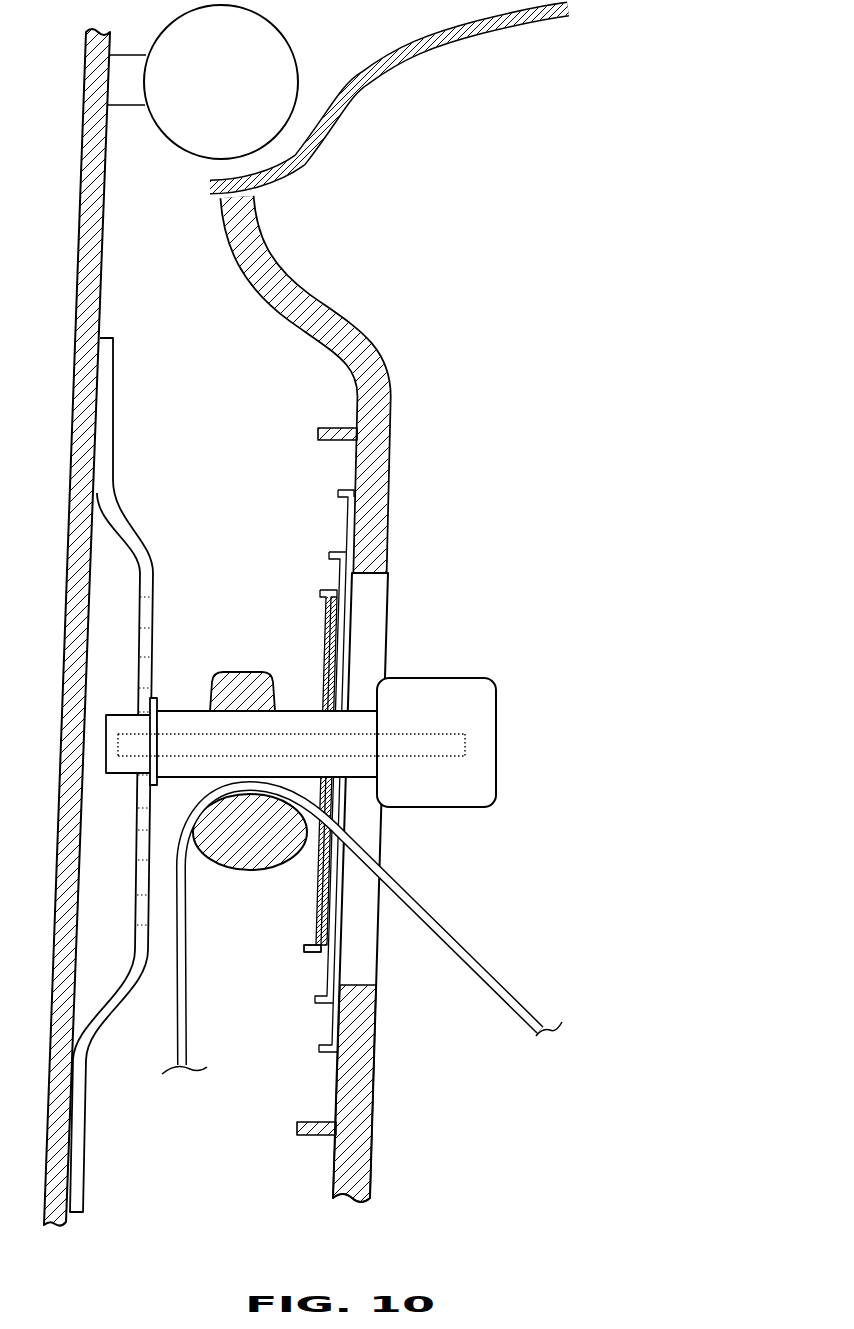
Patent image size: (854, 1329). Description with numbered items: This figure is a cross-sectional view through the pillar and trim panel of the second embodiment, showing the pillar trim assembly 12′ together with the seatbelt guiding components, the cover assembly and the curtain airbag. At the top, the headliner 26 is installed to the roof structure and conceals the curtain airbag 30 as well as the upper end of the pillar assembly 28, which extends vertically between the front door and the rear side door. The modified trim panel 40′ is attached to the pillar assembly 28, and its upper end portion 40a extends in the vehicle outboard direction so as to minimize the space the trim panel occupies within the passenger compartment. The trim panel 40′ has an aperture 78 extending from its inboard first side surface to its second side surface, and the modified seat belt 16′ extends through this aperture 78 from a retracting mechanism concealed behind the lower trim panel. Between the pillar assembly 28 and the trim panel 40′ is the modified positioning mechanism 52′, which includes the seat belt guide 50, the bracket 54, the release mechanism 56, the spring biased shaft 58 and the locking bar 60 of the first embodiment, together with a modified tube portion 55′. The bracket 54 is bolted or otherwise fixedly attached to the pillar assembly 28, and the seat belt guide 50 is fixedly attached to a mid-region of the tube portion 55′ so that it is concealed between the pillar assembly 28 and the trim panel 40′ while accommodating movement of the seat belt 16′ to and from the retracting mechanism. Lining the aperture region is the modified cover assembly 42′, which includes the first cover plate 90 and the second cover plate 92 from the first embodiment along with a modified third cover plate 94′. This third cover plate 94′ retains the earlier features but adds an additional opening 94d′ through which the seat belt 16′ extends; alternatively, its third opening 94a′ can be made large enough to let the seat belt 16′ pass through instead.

The pillar trim assembly 12′ is at (362, 326).
The seat belt 16′ is at (472, 962).
The headliner 26 is at (471, 30).
The pillar assembly 28 is at (88, 213).
The curtain airbag 30 is at (245, 32).
The upper end portion 40a is at (284, 266).
The trim panel 40′ is at (392, 378).
The cover assembly 42′ is at (315, 960).
The seat belt guide 50 is at (253, 672).
The positioning mechanism 52′ is at (174, 710).
The bracket 54 is at (108, 462).
The tube portion 55′ is at (183, 776).
The release mechanism 56 is at (487, 742).
The spring biased shaft 58 is at (312, 740).
The locking bar 60 is at (122, 727).
The aperture 78 is at (368, 593).
The first cover plate 90 is at (349, 610).
The second cover plate 92 is at (338, 648).
The third cover plate 94′ is at (337, 918).
The third opening 94a′ is at (330, 780).
The additional opening 94d′ is at (318, 832).